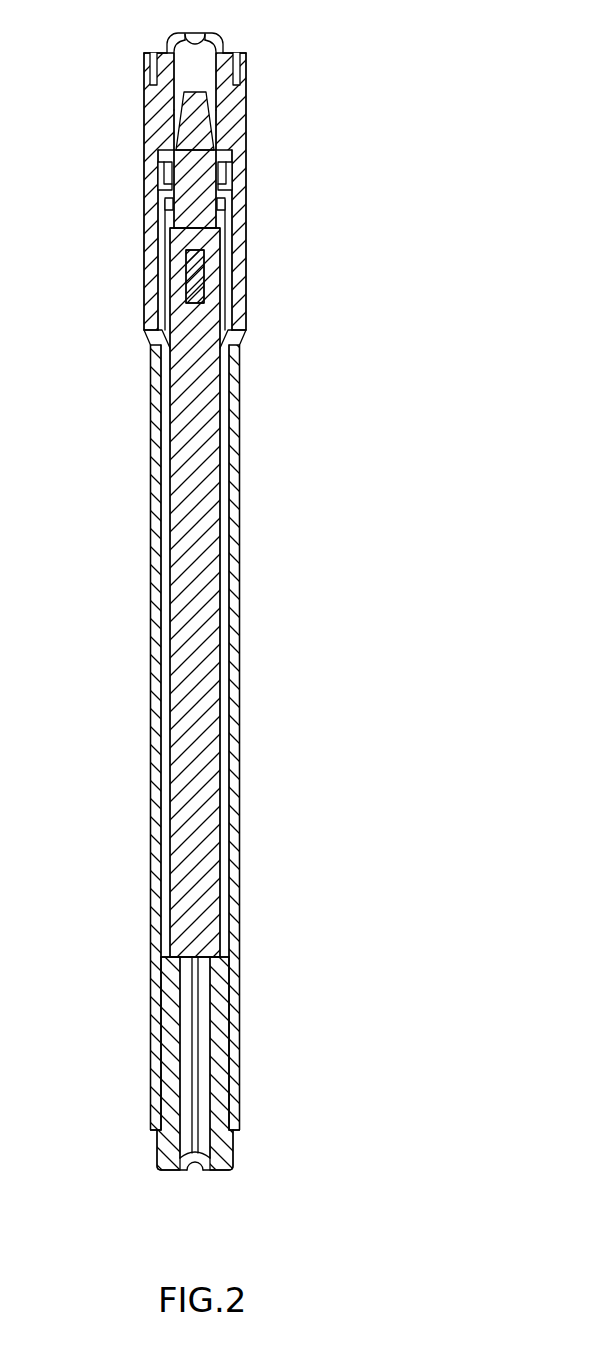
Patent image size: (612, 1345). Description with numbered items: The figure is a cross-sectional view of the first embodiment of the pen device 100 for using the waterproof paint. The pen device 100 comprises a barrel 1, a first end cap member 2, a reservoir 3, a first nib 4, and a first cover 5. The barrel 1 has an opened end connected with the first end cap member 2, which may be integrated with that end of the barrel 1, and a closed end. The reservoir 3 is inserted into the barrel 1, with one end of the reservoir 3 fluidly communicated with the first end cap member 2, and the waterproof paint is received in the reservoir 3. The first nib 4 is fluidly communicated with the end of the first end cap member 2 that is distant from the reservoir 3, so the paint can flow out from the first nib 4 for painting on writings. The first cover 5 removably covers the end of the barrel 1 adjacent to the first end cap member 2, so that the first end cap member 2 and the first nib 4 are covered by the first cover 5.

The pen device 100 is at (380, 334).
The barrel 1 is at (232, 733).
The first end cap member 2 is at (246, 184).
The reservoir 3 is at (187, 513).
The first nib 4 is at (186, 123).
The first cover 5 is at (243, 88).